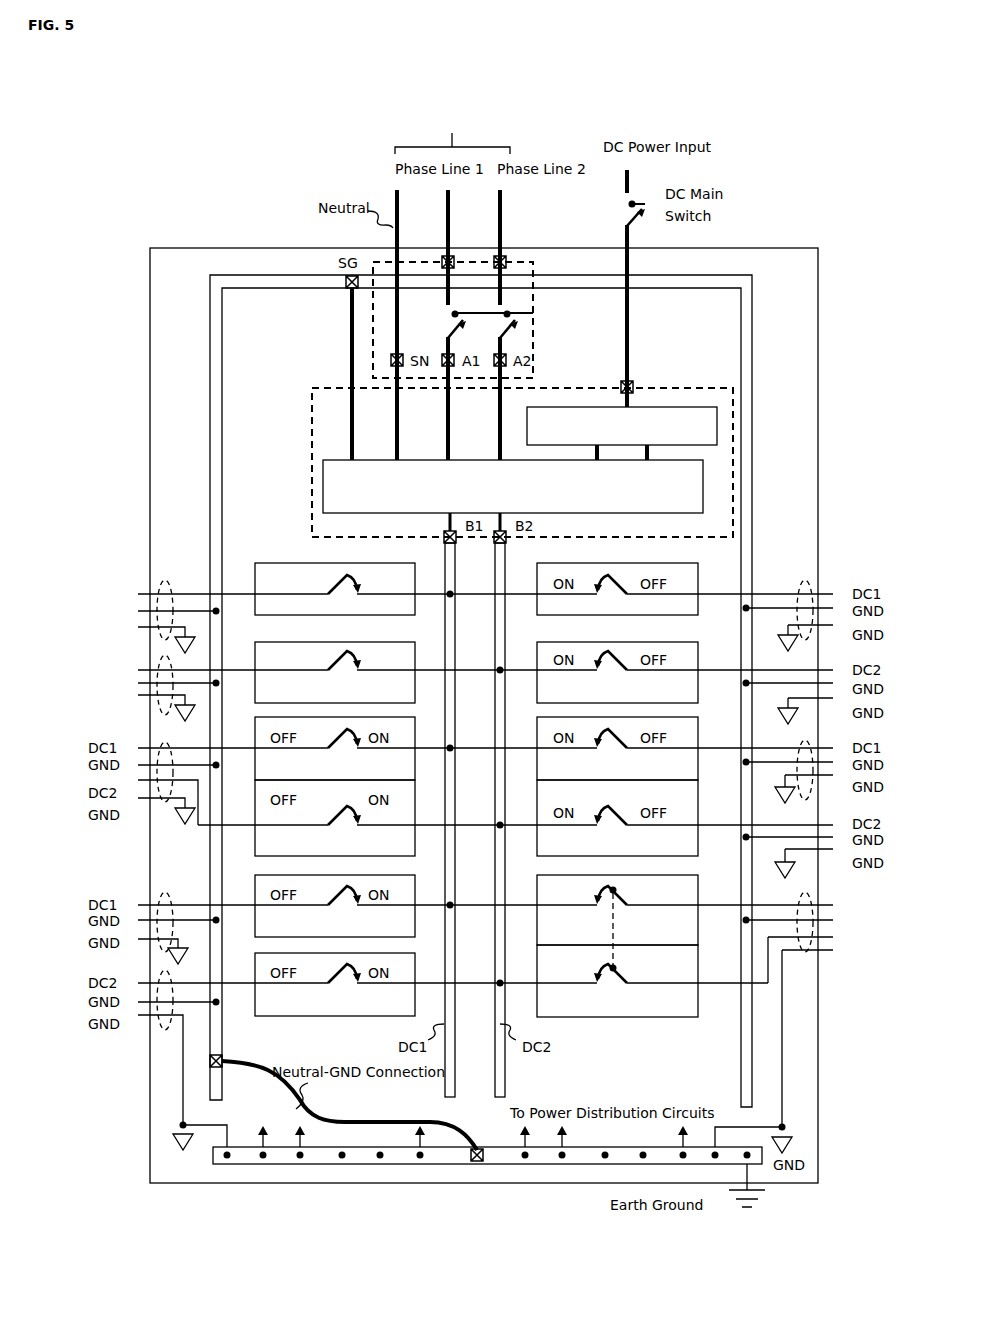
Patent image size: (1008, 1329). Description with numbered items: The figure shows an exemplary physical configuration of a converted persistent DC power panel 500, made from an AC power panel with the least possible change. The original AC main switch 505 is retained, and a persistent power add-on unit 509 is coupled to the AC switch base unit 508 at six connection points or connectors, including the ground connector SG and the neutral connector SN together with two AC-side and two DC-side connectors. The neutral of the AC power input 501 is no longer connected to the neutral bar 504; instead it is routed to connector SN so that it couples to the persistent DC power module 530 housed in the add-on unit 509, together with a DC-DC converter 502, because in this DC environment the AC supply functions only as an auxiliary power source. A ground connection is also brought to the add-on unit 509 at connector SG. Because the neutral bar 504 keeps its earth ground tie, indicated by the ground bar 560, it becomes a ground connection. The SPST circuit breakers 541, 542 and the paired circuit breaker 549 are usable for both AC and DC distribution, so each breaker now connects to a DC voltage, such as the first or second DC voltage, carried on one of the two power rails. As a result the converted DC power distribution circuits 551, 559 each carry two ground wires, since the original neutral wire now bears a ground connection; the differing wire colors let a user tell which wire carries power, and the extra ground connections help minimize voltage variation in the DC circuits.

The converted persistent DC power panel 500 is at (740, 245).
The AC power input 501 is at (457, 129).
The DC-DC Converter 502 is at (622, 426).
The neutral bar 504 is at (222, 407).
The AC Main Switch 505 is at (526, 328).
The AC switch base unit 508 is at (373, 358).
The persistent power add-on unit 509 is at (688, 386).
The persistent DC power module 530 is at (513, 486).
The SPST circuit breaker 541 is at (375, 563).
The SPST circuit breaker 542 is at (415, 641).
The circuit breaker 549 is at (638, 1018).
The DC power distribution circuit 551 is at (162, 590).
The DC power distribution circuit 559 is at (807, 963).
The Ground Bar 560 is at (365, 1166).